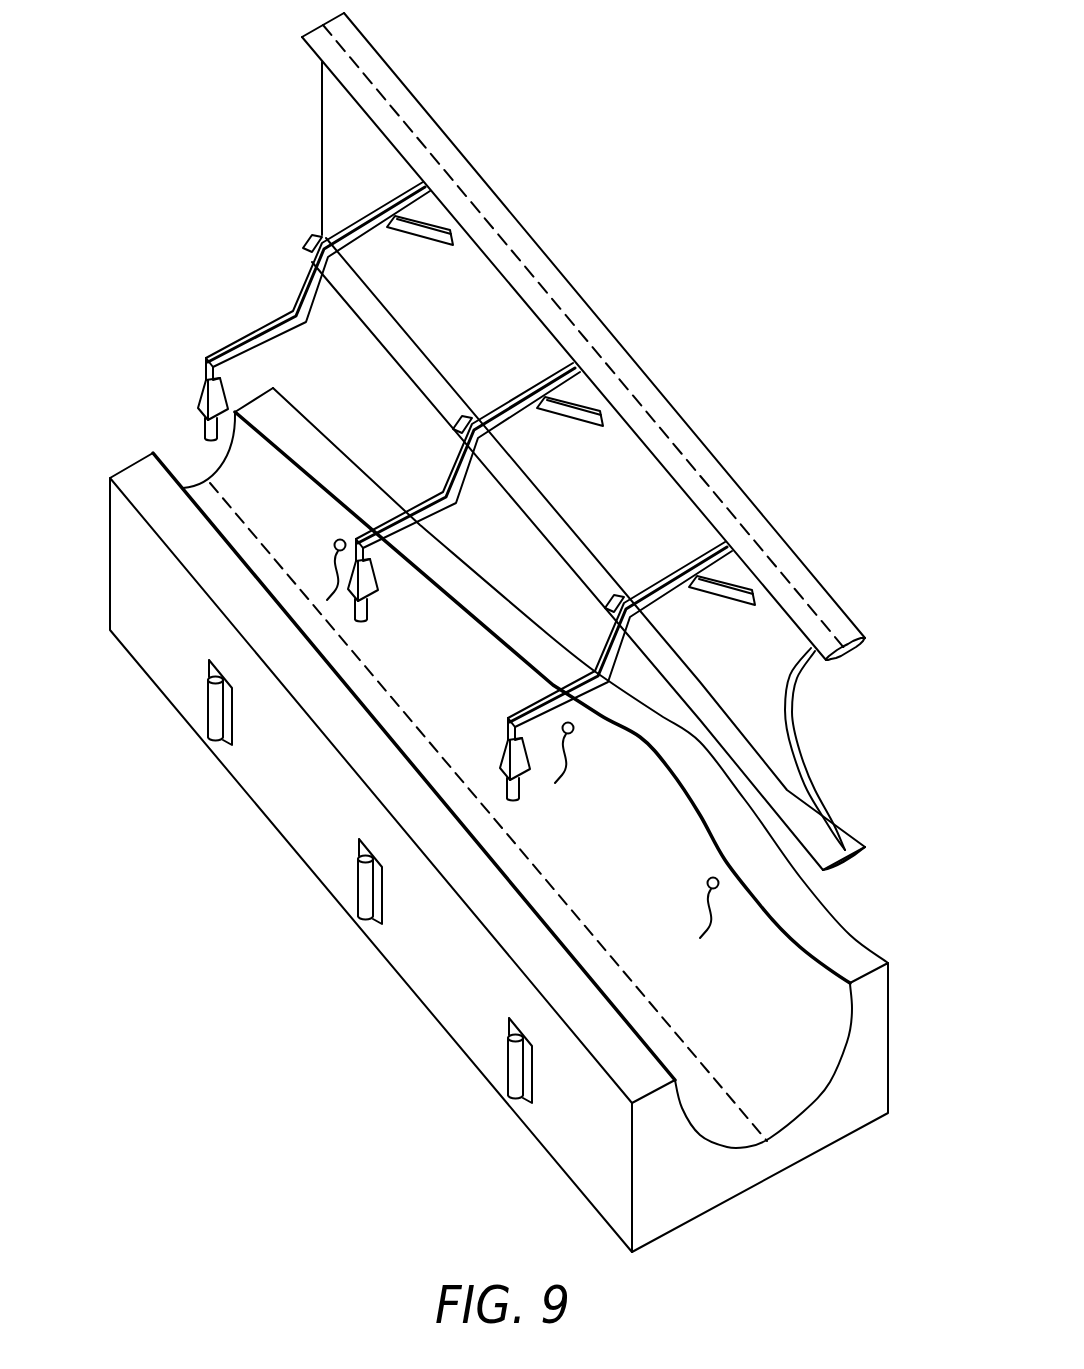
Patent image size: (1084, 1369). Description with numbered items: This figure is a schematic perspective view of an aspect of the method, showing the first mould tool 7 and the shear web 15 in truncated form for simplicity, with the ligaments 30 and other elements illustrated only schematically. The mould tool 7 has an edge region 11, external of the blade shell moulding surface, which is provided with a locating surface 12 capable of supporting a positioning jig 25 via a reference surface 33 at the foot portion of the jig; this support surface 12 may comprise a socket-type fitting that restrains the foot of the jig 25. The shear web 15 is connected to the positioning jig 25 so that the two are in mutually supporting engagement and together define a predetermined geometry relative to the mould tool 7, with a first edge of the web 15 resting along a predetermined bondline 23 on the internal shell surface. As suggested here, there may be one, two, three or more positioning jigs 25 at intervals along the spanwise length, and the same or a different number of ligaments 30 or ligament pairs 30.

The first mould tool 7 is at (405, 1046).
The edge region 11 is at (500, 883).
The locating surface 12 is at (357, 842).
The shear web 15 is at (778, 673).
The bondline 23 is at (692, 1050).
The positioning jig 25 is at (657, 583).
The ligaments 30 is at (701, 932).
The reference surface 33 is at (204, 364).